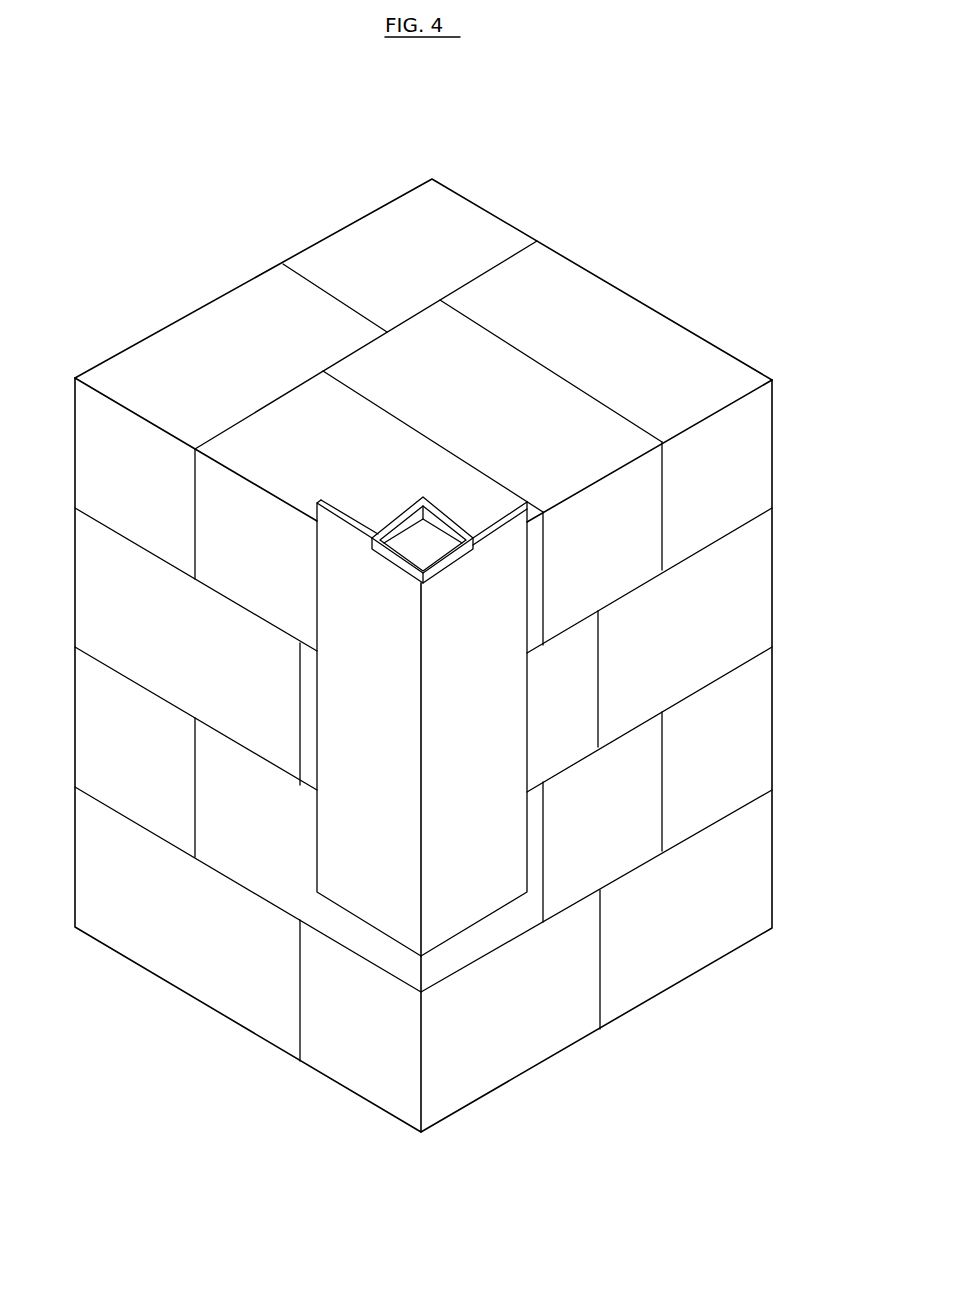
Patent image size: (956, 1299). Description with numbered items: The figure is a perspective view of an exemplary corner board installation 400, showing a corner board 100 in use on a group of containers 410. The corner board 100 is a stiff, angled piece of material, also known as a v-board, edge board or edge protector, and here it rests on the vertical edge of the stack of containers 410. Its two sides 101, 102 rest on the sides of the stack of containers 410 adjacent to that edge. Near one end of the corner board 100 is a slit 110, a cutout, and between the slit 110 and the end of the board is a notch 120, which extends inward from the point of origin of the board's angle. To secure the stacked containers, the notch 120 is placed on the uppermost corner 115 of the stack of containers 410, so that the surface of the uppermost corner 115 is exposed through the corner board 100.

The corner guard installation assembly 400 is at (631, 128).
The group of containers 410 is at (774, 480).
The corner board 100 is at (531, 674).
The side of corner board 101 is at (478, 873).
The side of corner board 102 is at (377, 890).
The slit 110 is at (455, 573).
The notch 120 is at (453, 516).
The uppermost corner 115 is at (415, 552).